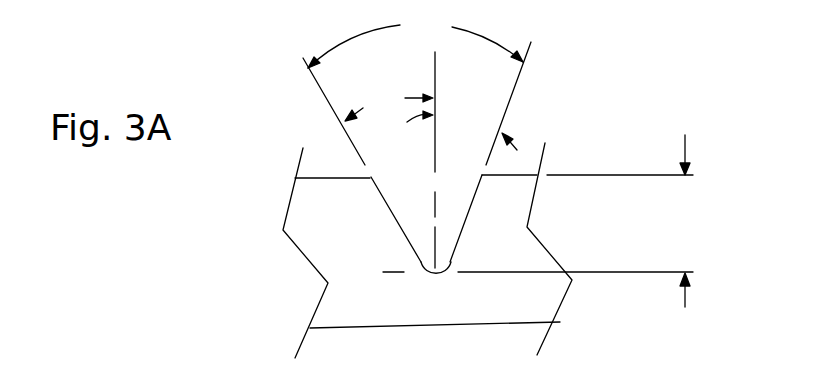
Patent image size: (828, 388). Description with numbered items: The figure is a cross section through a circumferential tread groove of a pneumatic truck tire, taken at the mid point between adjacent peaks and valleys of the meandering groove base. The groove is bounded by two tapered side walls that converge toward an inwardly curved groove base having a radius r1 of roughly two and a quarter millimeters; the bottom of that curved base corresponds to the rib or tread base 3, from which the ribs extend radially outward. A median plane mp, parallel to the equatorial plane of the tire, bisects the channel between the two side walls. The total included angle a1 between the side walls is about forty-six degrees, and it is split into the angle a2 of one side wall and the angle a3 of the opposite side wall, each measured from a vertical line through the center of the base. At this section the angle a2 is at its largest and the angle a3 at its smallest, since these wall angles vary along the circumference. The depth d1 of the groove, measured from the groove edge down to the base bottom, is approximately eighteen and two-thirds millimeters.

The tread base 3 is at (373, 275).
The groove base radius r1 is at (437, 290).
The median plane mp is at (437, 72).
The angle between the side walls a1 is at (415, 40).
The angle of side wall 4 a2 is at (389, 103).
The angle of side wall 5 a3 is at (462, 127).
The depth of the groove d1 is at (540, 221).